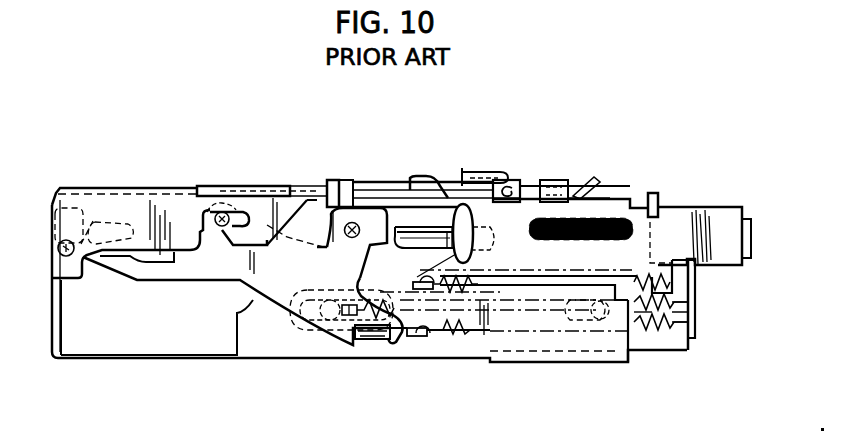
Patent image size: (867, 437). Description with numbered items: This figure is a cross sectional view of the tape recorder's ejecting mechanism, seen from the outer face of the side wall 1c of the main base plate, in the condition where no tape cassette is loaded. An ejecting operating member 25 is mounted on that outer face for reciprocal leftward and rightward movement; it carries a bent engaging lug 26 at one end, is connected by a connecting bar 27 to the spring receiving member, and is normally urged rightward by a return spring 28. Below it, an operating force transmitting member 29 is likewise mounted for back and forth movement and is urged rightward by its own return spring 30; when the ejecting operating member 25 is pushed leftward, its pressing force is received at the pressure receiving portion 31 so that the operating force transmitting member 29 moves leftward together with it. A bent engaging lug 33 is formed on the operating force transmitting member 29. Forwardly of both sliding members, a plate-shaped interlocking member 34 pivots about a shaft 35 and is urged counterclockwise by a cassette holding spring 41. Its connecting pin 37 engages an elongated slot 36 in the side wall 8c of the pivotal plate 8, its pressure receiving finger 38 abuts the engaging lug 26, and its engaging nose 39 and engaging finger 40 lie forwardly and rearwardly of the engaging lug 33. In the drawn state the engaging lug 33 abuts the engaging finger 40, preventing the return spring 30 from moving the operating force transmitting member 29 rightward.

The pivotal plate 8 is at (147, 187).
The side wall of the pivotal plate 8c is at (135, 212).
The side wall of the main base plate 1c is at (638, 203).
The ejecting operating member 25 is at (698, 207).
The bent engaging lug 26 is at (432, 242).
The connecting bar 27 is at (478, 176).
The return spring 28 is at (674, 290).
The operating force transmitting member 29 is at (541, 362).
The return spring 30 is at (668, 302).
The pressure receiving portion 31 is at (620, 277).
The bent engaging lug 33 is at (368, 341).
The interlocking member 34 is at (173, 283).
The shaft 35 is at (347, 238).
The elongated slot 36 is at (242, 218).
The connecting pin 37 is at (220, 212).
The pressure receiving finger 38 is at (468, 222).
The engaging nose 39 is at (348, 346).
The engaging finger 40 is at (402, 344).
The cassette holding spring 41 is at (656, 298).